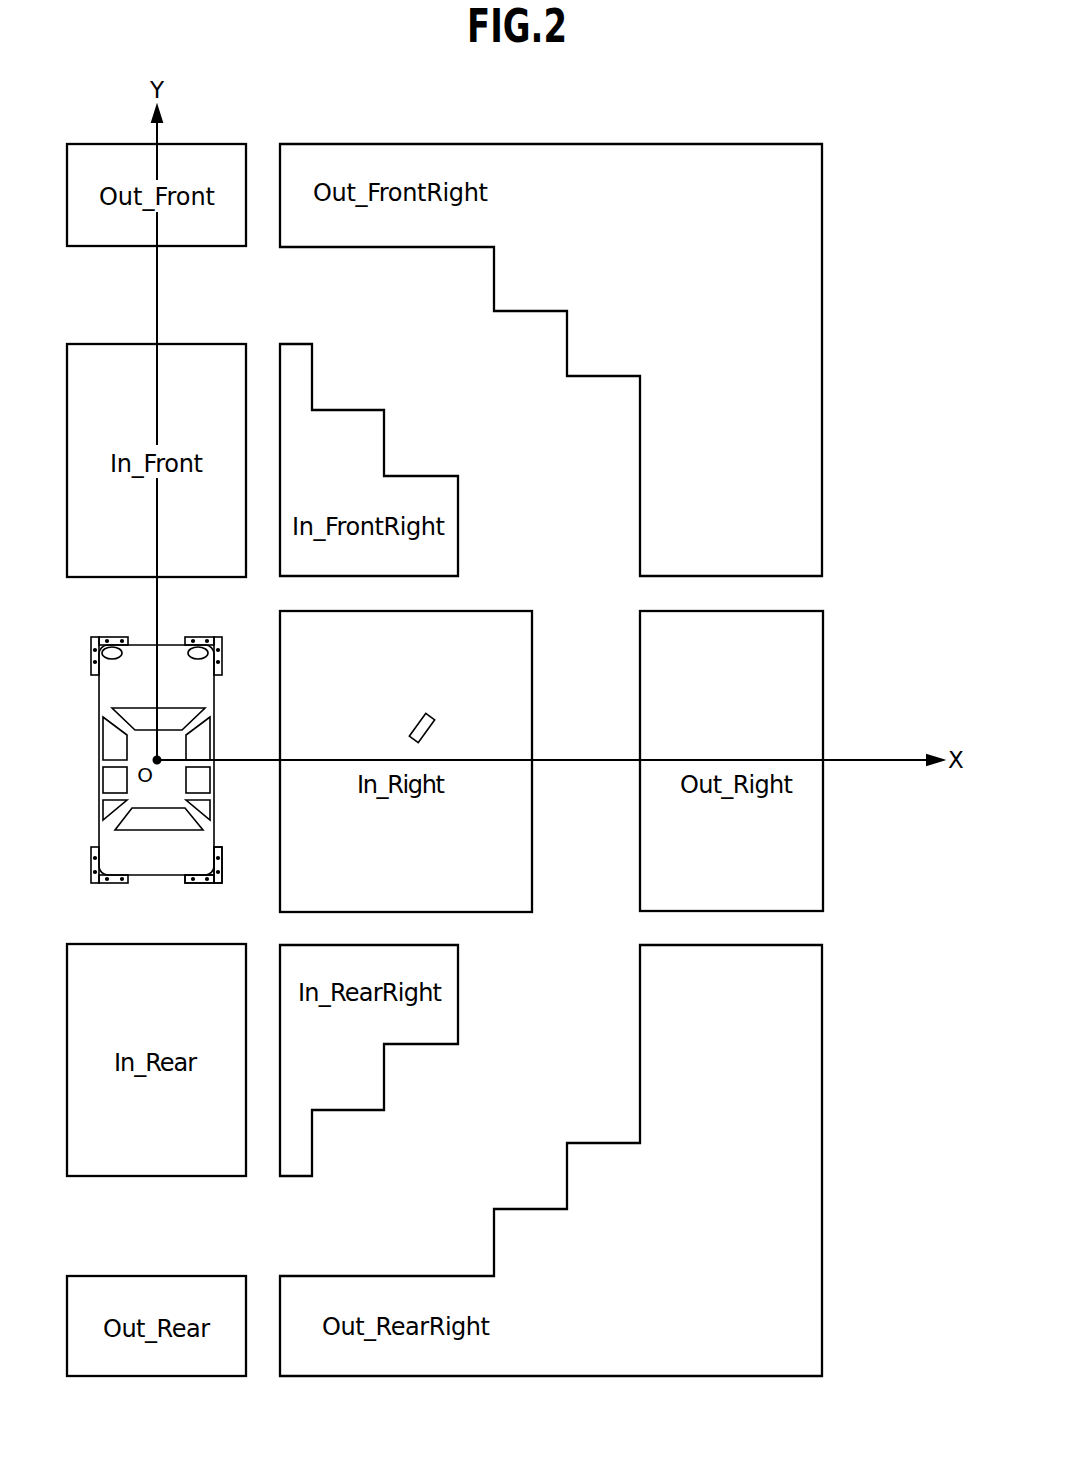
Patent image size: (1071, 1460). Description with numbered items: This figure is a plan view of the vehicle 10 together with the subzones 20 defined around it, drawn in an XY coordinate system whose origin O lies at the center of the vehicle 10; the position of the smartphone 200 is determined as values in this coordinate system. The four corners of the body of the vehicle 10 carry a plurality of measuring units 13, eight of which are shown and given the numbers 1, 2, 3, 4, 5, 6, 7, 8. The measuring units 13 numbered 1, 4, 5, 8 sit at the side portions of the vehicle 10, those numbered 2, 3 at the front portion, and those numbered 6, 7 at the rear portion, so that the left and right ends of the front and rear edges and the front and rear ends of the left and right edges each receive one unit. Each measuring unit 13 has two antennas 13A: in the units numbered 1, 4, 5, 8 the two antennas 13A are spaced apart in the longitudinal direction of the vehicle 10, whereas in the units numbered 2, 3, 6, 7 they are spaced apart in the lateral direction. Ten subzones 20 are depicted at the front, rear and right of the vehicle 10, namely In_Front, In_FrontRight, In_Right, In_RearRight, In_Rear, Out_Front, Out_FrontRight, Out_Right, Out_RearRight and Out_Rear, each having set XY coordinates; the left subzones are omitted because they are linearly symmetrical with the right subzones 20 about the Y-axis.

The measuring unit number one 1 is at (84, 656).
The measuring unit number two 2 is at (113, 624).
The measuring unit number three 3 is at (199, 624).
The measuring unit number four 4 is at (228, 656).
The measuring unit number five 5 is at (228, 865).
The measuring unit number six 6 is at (199, 896).
The measuring unit number seven 7 is at (113, 896).
The measuring unit number eight 8 is at (84, 865).
The vehicle 10 is at (157, 877).
The measuring unit 13 is at (203, 883).
The antenna 13A is at (216, 883).
The subzone 20 is at (492, 611).
The smartphone 200 is at (428, 733).